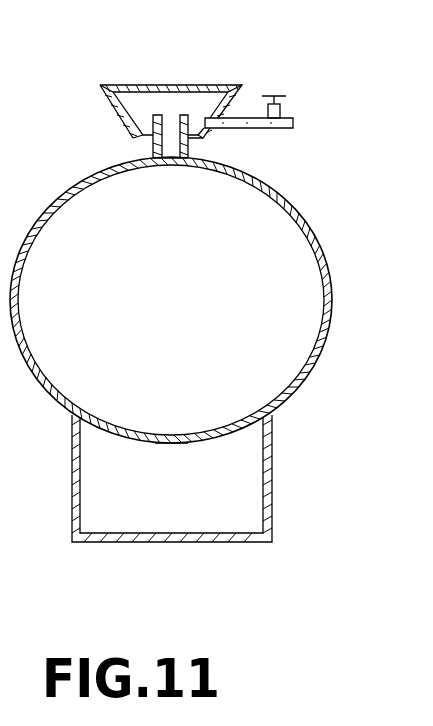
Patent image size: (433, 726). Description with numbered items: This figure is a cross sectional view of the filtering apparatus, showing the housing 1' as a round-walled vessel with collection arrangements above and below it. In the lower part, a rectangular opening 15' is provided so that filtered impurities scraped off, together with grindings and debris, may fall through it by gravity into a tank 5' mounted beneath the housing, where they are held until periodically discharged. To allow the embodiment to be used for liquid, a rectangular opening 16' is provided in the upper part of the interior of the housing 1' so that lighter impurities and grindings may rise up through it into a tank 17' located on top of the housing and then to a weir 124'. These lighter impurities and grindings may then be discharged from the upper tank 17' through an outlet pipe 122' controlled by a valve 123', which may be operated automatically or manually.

The housing 1' is at (209, 300).
The tank 5' is at (212, 478).
The rectangular opening 15' is at (192, 406).
The rectangular opening 16' is at (183, 187).
The tank 17' is at (170, 88).
The outlet pipe 122' is at (281, 128).
The valve 123' is at (310, 103).
The weir 124' is at (181, 98).